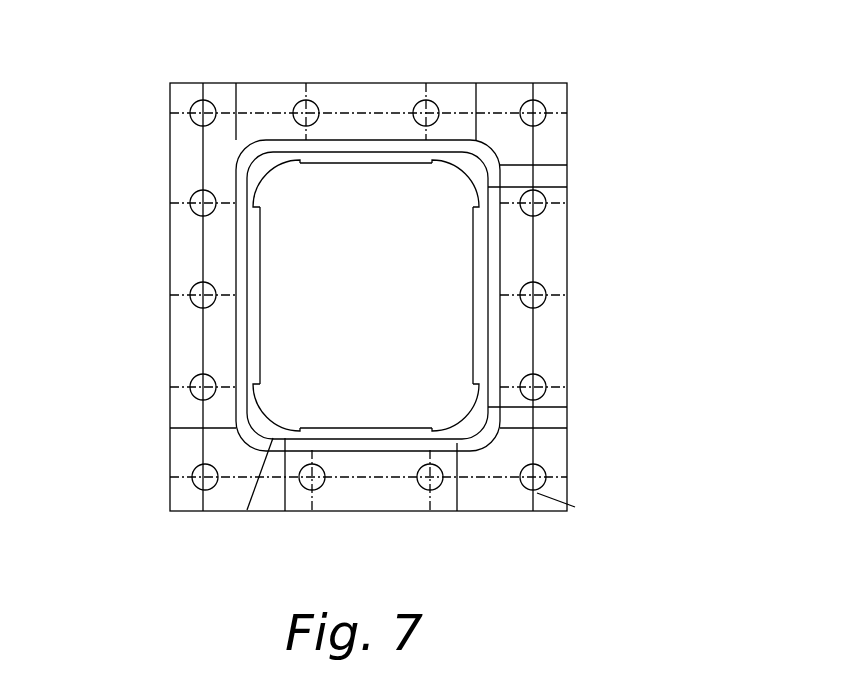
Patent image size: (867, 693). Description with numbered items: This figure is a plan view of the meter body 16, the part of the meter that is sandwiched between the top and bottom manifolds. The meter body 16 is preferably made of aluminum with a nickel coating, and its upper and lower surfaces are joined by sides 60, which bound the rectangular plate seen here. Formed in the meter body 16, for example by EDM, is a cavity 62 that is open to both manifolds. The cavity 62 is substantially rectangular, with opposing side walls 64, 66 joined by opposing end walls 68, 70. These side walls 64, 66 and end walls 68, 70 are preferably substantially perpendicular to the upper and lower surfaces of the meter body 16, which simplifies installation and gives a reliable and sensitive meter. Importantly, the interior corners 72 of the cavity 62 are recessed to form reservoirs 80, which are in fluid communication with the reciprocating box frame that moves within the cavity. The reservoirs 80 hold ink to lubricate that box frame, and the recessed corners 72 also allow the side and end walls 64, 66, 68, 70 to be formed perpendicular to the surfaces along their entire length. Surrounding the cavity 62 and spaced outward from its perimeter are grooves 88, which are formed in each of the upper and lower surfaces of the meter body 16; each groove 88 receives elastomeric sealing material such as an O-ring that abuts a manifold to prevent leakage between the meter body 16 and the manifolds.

The meter body 16 is at (650, 238).
The sides 60 is at (377, 80).
The cavity 62 is at (466, 295).
The side wall 64 is at (470, 256).
The side wall 66 is at (263, 274).
The end wall 68 is at (393, 427).
The end wall 70 is at (388, 168).
The interior corners 72 is at (258, 176).
The reservoirs 80 is at (267, 172).
The grooves 88 is at (236, 182).